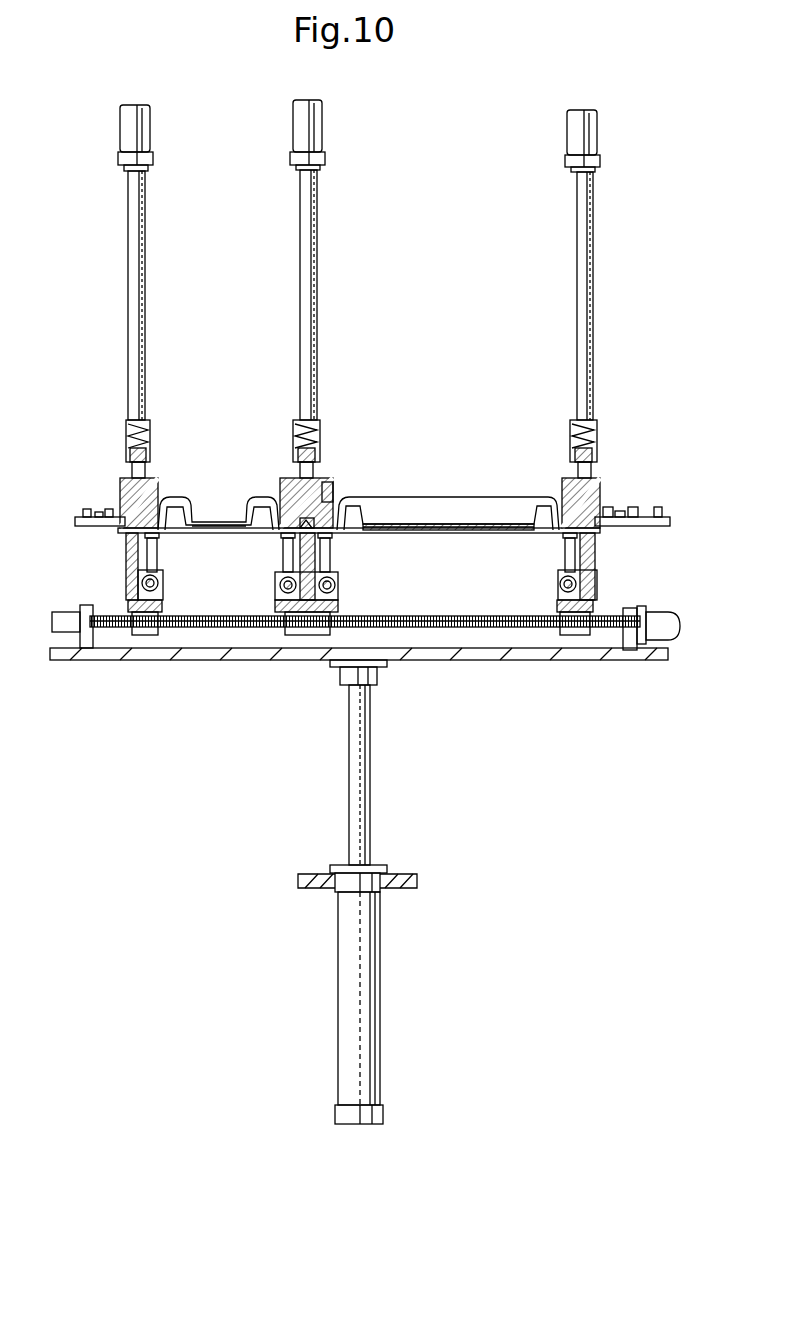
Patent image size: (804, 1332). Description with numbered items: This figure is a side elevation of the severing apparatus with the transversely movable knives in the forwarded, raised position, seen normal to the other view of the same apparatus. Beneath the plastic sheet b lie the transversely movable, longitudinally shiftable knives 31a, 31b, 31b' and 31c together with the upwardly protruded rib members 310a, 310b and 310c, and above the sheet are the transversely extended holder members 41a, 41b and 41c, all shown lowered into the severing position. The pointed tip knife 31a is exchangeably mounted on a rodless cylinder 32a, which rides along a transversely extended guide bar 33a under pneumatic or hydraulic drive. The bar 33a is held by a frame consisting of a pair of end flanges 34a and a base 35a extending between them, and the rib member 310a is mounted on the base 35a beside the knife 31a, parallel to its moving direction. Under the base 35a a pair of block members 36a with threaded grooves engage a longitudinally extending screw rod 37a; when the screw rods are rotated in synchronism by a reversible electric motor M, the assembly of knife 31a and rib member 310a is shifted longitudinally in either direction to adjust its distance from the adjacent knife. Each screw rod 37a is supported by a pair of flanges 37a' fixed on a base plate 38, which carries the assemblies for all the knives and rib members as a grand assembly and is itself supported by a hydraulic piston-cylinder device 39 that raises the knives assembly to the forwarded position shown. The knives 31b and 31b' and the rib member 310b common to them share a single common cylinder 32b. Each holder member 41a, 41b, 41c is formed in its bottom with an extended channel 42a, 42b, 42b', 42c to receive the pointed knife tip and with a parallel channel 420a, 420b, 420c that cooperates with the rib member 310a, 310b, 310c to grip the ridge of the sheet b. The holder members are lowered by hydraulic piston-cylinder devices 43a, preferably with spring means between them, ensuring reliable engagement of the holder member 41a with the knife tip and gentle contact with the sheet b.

The hydraulic piston-cylinder device 43a is at (125, 135).
The holder member 41a is at (133, 484).
The holder member 41b is at (316, 475).
The holder member 41c is at (590, 485).
The extended channel 42a is at (122, 498).
The extended channel 42b is at (286, 487).
The extended channel 42b' is at (375, 486).
The extended channel 42c is at (568, 510).
The extended channel 420a is at (116, 520).
The extended channel 420b is at (310, 520).
The extended channel 420c is at (590, 522).
The rib member 310a is at (128, 553).
The rib member 310b is at (316, 556).
The rib member 310c is at (596, 560).
The knife 31a is at (153, 535).
The knife 31b is at (270, 552).
The knife 31b' is at (386, 552).
The knife 31c is at (566, 536).
The plastic sheet b is at (216, 533).
The rodless cylinder 32a is at (141, 584).
The common cylinder 32b is at (338, 588).
The guide bar 33a is at (165, 582).
The end flange 34a is at (165, 598).
The base 35a is at (92, 612).
The block member 36a is at (148, 630).
The screw rod 37a is at (365, 663).
The flange 37a' is at (359, 660).
The reversible electric motor M is at (668, 612).
The base plate 38 is at (535, 660).
The hydraulic piston-cylinder device 39 is at (378, 977).